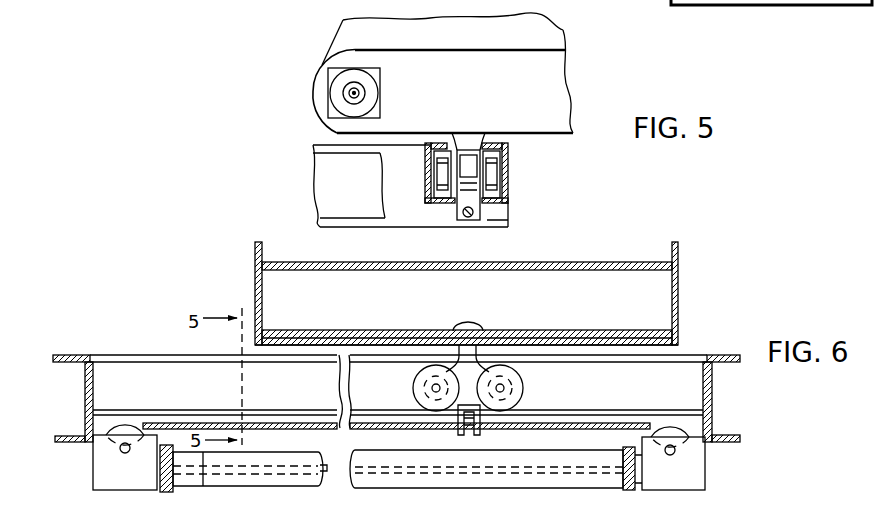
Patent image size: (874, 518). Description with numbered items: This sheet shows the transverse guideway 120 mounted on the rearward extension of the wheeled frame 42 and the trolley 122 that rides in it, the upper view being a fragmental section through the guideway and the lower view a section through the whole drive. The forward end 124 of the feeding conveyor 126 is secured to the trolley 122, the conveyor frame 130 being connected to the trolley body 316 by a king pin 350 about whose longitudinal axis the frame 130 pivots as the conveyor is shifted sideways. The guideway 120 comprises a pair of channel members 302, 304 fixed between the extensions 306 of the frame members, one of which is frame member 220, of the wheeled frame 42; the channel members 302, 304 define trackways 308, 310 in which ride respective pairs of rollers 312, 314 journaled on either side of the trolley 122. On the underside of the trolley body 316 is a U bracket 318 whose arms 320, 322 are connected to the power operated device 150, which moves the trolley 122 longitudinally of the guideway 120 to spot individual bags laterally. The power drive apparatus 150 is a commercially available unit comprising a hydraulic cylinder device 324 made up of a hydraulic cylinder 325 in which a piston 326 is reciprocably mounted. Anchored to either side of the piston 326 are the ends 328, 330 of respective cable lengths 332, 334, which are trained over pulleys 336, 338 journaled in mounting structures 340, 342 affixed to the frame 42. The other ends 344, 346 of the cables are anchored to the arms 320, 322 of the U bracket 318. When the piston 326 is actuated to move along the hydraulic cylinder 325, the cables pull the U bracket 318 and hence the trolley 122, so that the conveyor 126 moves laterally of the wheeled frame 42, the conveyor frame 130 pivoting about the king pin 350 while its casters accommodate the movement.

In FIG. 6, the wheeled frame 42 is at (727, 393).
In FIG. 5, the guideway 120 is at (513, 190).
In FIG. 5, the trolley 122 is at (494, 141).
In FIG. 6, the trolley 122 is at (500, 351).
In FIG. 5, the forward end of feeding conveyor 124 is at (428, 66).
In FIG. 5, the feeding conveyor 126 is at (548, 77).
In FIG. 6, the frame 130 is at (678, 283).
In FIG. 6, the power drive apparatus 150 is at (620, 399).
In FIG. 5, the frame member 220 is at (342, 158).
In FIG. 5, the channel member 302 is at (508, 167).
In FIG. 5, the channel member 304 is at (423, 170).
In FIG. 5, the extensions 306 is at (328, 177).
In FIG. 5, the trackway 308 is at (500, 147).
In FIG. 5, the trackway 310 is at (437, 150).
In FIG. 5, the rollers 312 is at (507, 205).
In FIG. 6, the rollers 312 is at (420, 370).
In FIG. 5, the rollers 314 is at (447, 197).
In FIG. 6, the body 316 is at (469, 362).
In FIG. 6, the U bracket 318 is at (530, 412).
In FIG. 6, the arm 320 is at (490, 430).
In FIG. 6, the arm 322 is at (458, 428).
In FIG. 6, the hydraulic cylinder device 324 is at (600, 450).
In FIG. 6, the hydraulic cylinder 325 is at (614, 477).
In FIG. 6, the piston 326 is at (213, 462).
In FIG. 6, the cable end 328 is at (246, 458).
In FIG. 6, the cable end 330 is at (180, 446).
In FIG. 6, the cable length 332 is at (325, 467).
In FIG. 6, the cable length 334 is at (372, 421).
In FIG. 6, the pulley 336 is at (677, 432).
In FIG. 6, the pulley 338 is at (120, 425).
In FIG. 6, the mounting structure 340 is at (690, 471).
In FIG. 6, the mounting structure 342 is at (105, 478).
In FIG. 6, the cable end 344 is at (535, 421).
In FIG. 6, the cable end 346 is at (403, 406).
In FIG. 6, the king pin 350 is at (469, 321).